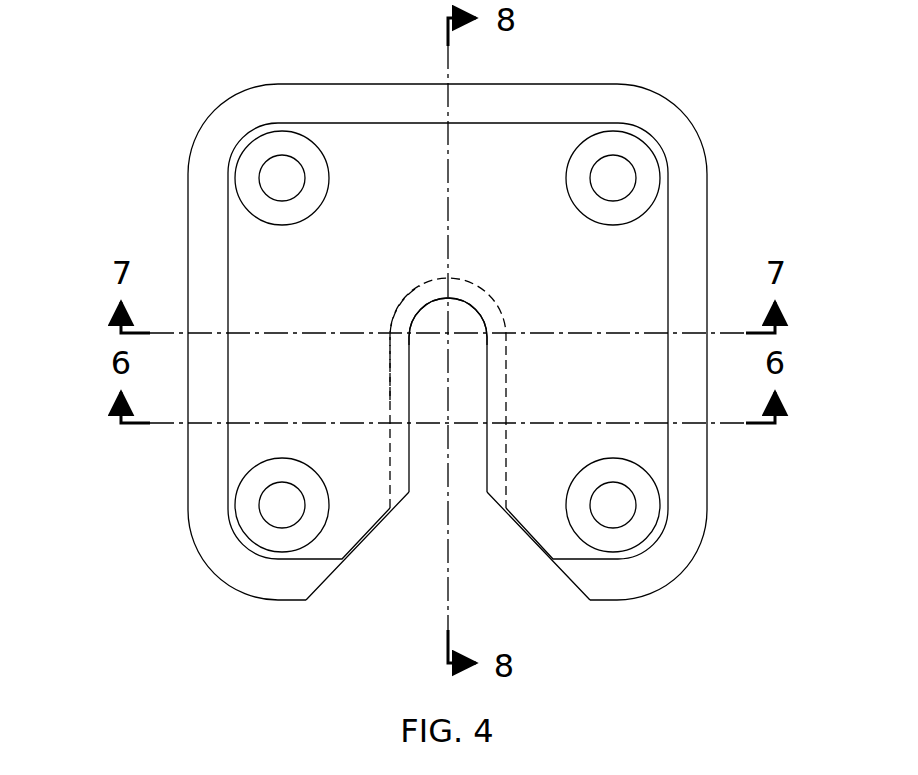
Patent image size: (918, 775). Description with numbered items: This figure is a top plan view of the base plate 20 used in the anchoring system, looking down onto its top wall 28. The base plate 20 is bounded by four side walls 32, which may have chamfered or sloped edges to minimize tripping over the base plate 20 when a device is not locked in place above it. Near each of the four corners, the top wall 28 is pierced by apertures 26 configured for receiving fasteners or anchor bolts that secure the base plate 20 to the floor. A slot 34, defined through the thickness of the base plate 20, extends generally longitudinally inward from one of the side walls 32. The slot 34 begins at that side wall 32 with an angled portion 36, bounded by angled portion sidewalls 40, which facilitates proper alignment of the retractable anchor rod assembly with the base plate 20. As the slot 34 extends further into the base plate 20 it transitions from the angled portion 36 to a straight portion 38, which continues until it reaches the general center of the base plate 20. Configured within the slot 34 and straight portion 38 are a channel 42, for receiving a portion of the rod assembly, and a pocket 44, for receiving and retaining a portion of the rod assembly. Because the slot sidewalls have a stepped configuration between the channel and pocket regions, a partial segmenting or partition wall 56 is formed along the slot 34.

The base plate 20 is at (694, 72).
The apertures 26 is at (273, 168).
The top wall 28 is at (523, 219).
The side walls 32 is at (318, 84).
The slot 34 is at (470, 397).
The angled portion 36 is at (422, 532).
The straight portion 38 is at (428, 313).
The angled portion sidewalls 40 is at (351, 554).
The channel 42 is at (495, 452).
The pocket 44 is at (393, 346).
The partition wall 56 is at (404, 379).